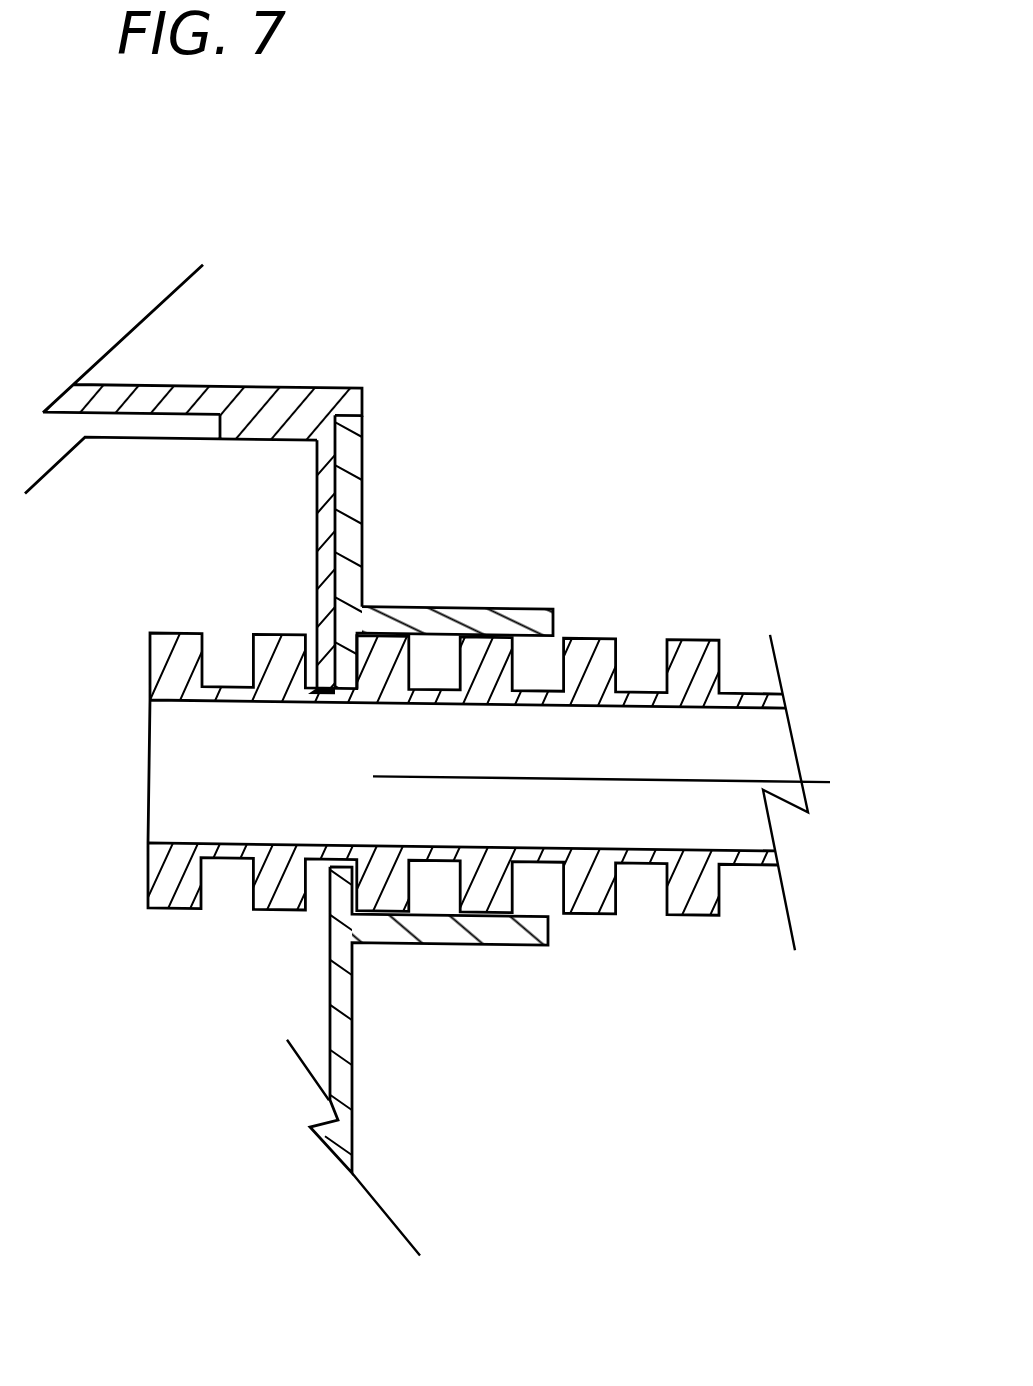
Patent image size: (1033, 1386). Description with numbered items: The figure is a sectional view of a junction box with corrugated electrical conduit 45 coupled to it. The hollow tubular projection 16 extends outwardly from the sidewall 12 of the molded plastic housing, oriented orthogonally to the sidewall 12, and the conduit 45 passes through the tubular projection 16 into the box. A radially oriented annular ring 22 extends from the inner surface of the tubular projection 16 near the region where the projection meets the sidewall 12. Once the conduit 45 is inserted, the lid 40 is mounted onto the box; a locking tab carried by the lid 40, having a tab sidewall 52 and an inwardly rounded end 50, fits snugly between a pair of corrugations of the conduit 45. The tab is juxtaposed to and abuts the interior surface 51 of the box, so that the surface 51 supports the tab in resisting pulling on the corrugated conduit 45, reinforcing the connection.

The sidewall 12 is at (340, 1051).
The tubular projection 16 is at (470, 603).
The annular ring 22 is at (830, 774).
The lid 40 is at (217, 384).
The corrugated conduit 45 is at (695, 633).
The inwardly rounded end 50 is at (330, 684).
The interior surface 51 is at (352, 462).
The tab sidewall 52 is at (322, 481).